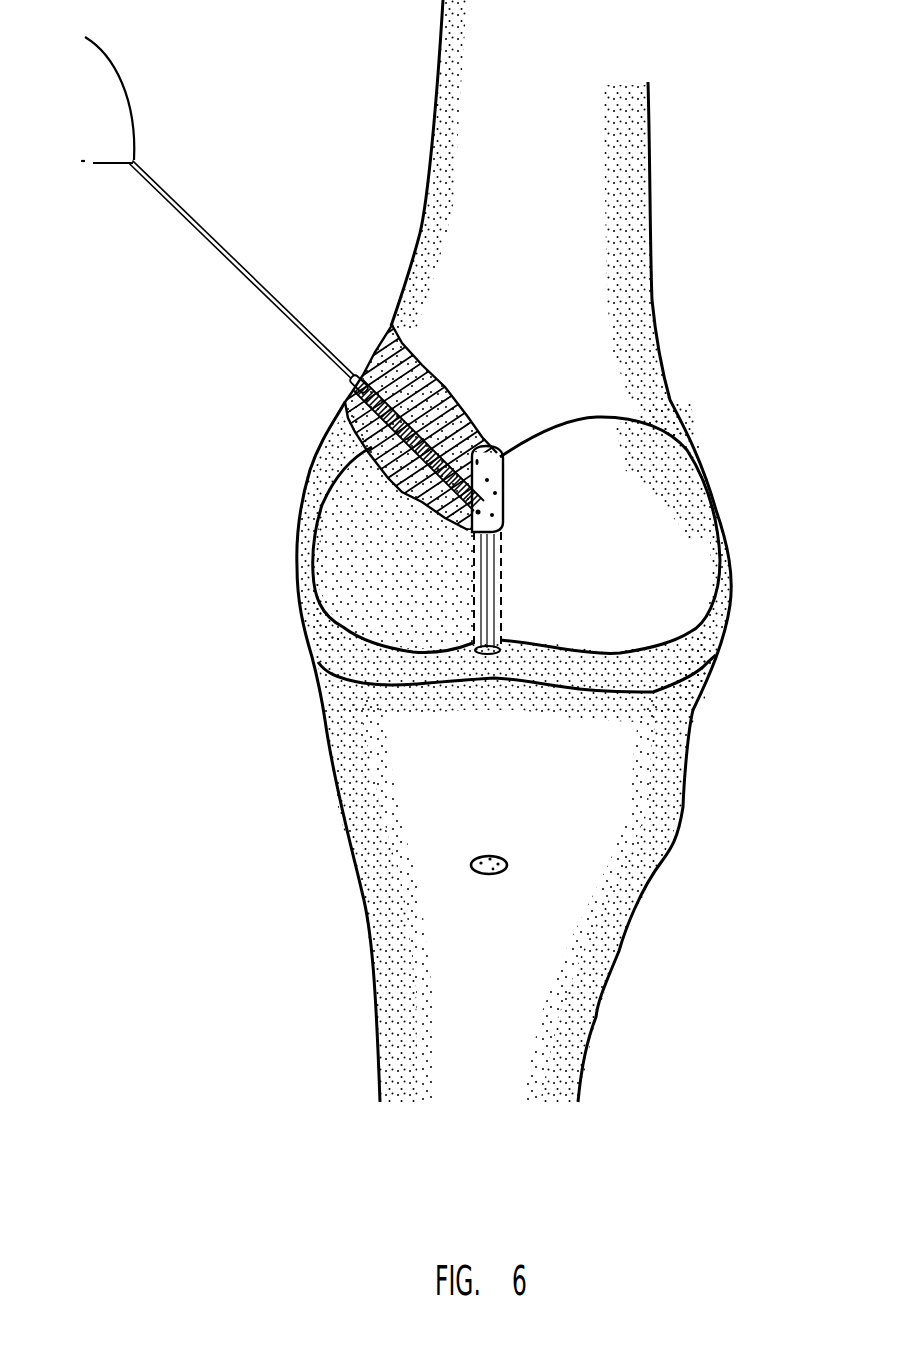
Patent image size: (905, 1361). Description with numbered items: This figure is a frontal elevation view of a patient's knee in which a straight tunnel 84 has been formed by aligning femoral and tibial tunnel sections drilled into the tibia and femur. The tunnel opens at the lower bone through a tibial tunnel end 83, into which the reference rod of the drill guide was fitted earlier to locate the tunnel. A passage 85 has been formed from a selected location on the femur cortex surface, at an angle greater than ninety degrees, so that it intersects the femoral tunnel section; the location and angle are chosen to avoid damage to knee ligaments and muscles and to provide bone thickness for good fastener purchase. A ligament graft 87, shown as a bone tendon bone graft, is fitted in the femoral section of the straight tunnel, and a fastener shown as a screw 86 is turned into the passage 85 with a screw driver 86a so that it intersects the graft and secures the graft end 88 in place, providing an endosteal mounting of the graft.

The tibial tunnel end 83 is at (500, 873).
The straight tunnel 84 is at (503, 560).
The passage 85 is at (348, 405).
The screw 86 is at (360, 382).
The screw driver 86a is at (223, 262).
The ligament graft 87 is at (503, 600).
The graft end 88 is at (640, 419).